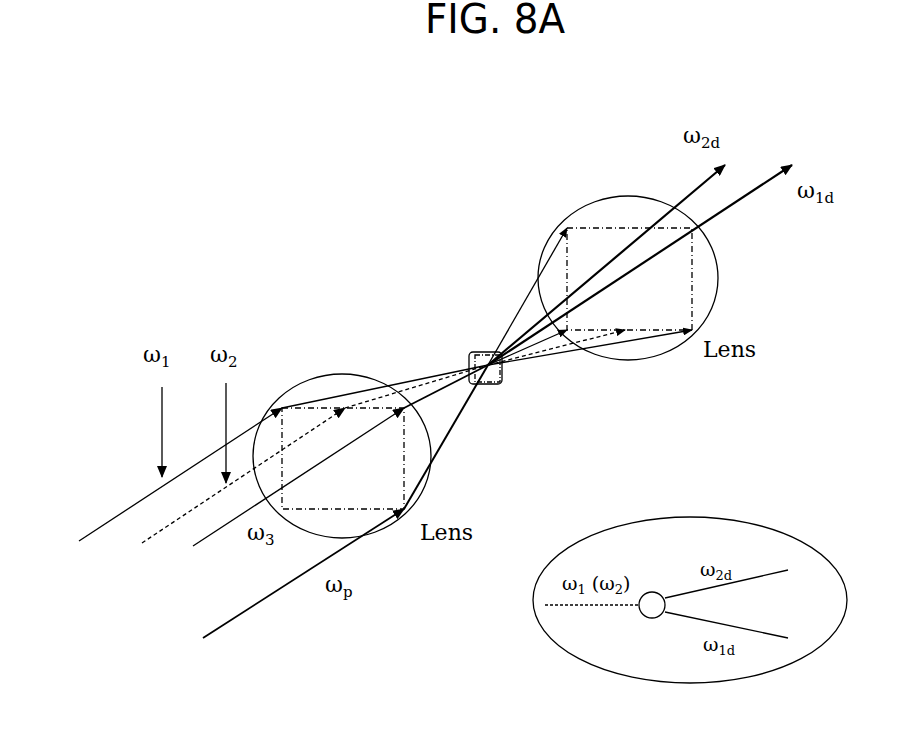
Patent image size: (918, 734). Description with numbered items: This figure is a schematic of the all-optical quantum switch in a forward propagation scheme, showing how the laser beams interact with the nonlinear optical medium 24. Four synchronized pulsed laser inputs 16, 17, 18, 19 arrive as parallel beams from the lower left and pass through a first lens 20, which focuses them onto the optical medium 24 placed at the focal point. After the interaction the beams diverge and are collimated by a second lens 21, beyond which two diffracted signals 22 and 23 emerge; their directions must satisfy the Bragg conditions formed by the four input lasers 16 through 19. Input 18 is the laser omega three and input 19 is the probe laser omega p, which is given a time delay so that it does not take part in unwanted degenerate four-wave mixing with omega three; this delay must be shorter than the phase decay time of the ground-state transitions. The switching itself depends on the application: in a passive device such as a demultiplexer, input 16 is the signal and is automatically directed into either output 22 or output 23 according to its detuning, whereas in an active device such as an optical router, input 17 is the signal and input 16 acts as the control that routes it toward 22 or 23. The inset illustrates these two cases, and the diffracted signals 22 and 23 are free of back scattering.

The laser input 16 is at (110, 522).
The laser input 17 is at (160, 532).
The laser input 18 is at (217, 532).
The laser input 19 is at (243, 615).
The lens 20 is at (372, 378).
The lens 21 is at (567, 222).
The diffracted signal 22 is at (737, 200).
The diffracted signal 23 is at (672, 197).
The optical medium 24 is at (498, 383).